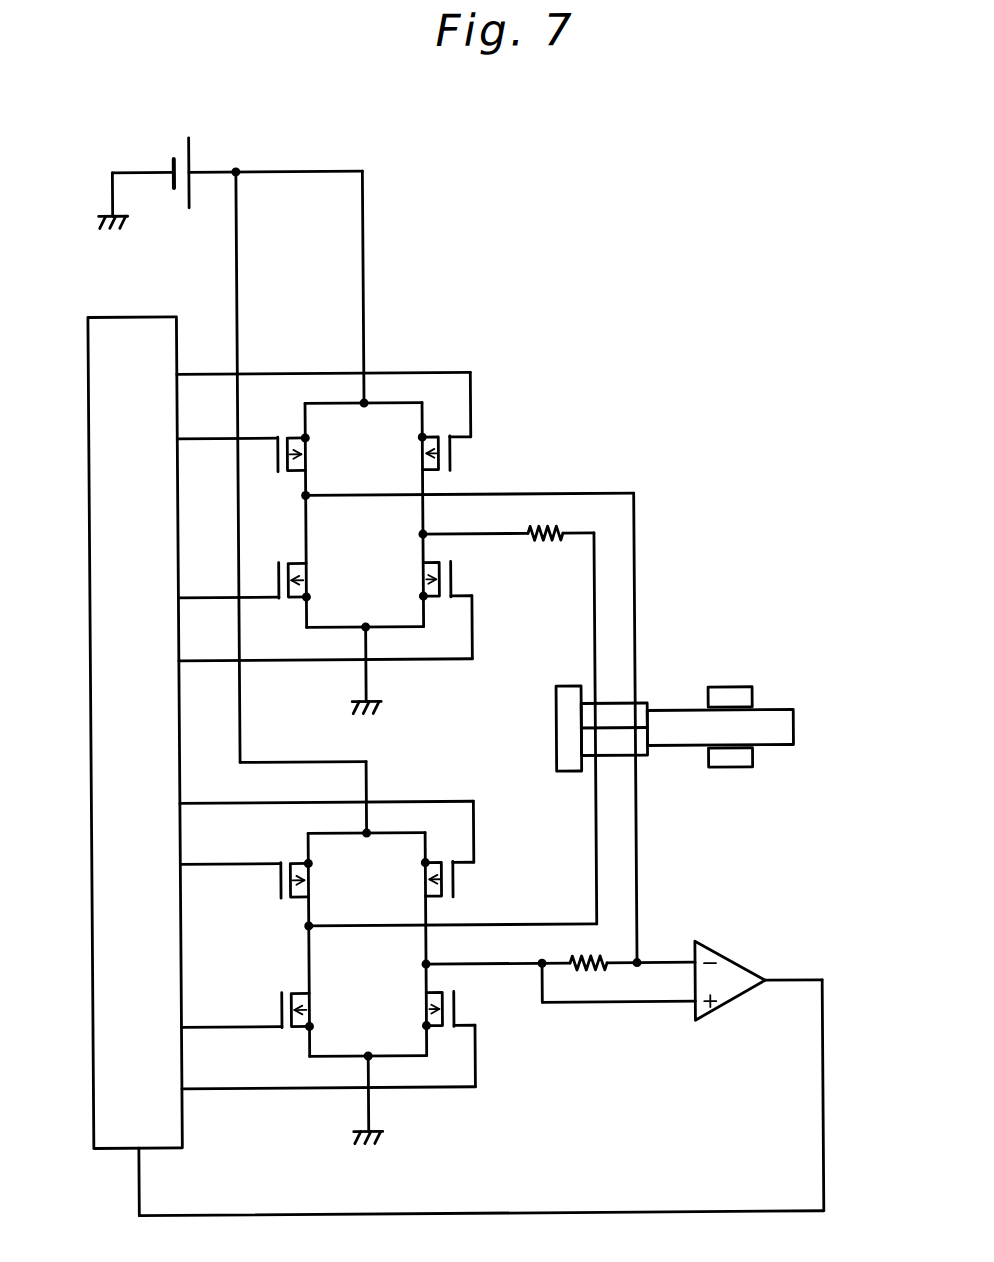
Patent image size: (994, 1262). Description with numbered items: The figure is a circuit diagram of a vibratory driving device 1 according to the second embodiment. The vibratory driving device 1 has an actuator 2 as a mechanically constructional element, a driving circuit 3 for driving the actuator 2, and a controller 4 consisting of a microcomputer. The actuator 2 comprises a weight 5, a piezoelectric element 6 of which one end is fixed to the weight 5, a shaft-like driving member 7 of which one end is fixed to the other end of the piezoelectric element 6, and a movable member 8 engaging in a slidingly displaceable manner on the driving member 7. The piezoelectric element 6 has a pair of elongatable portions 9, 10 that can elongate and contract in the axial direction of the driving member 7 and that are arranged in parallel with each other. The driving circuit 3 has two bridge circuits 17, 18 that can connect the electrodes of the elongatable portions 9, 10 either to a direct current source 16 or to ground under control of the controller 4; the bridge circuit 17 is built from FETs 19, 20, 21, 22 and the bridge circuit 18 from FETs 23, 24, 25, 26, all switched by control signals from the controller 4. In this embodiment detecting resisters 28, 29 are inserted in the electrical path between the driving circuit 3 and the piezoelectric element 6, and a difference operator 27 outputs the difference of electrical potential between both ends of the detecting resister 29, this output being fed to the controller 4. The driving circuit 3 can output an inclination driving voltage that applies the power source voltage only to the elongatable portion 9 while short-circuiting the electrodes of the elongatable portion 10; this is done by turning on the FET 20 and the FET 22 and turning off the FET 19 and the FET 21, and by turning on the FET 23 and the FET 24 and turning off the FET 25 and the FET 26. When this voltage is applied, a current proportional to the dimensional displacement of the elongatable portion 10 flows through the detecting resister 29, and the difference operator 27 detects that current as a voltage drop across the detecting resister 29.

The vibratory driving device 1 is at (629, 204).
The actuator 2 is at (763, 639).
The driving circuit 3 is at (448, 273).
The controller 4 is at (110, 316).
The weight 5 is at (554, 730).
The piezoelectric element 6 is at (615, 704).
The driving member 7 is at (782, 713).
The movable member 8 is at (731, 690).
The elongatable portion 9 is at (645, 704).
The elongatable portion 10 is at (645, 758).
The direct current source 16 is at (175, 158).
The bridge circuit 17 is at (405, 492).
The bridge circuit 18 is at (388, 921).
The FET 19 is at (302, 454).
The FET 20 is at (424, 454).
The FET 21 is at (424, 580).
The FET 22 is at (302, 580).
The FET 23 is at (302, 880).
The FET 24 is at (424, 880).
The FET 25 is at (424, 1010).
The FET 26 is at (302, 1010).
The difference operator 27 is at (721, 948).
The detecting resister 28 is at (543, 552).
The detecting resister 29 is at (596, 957).